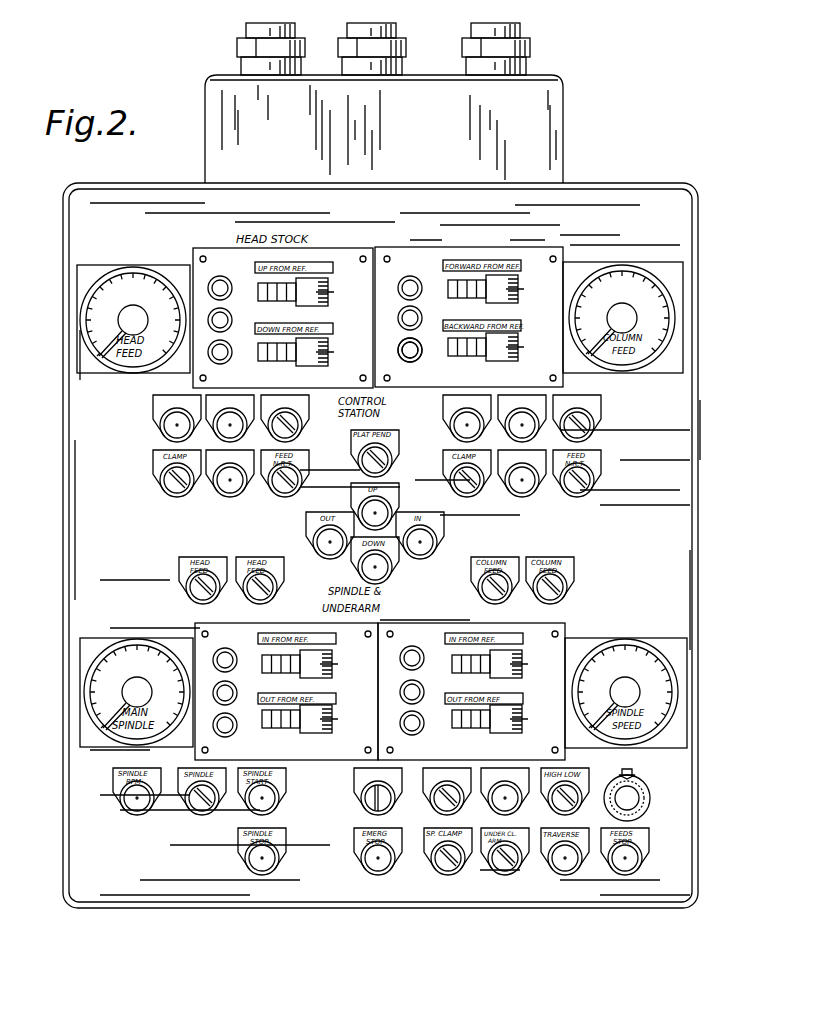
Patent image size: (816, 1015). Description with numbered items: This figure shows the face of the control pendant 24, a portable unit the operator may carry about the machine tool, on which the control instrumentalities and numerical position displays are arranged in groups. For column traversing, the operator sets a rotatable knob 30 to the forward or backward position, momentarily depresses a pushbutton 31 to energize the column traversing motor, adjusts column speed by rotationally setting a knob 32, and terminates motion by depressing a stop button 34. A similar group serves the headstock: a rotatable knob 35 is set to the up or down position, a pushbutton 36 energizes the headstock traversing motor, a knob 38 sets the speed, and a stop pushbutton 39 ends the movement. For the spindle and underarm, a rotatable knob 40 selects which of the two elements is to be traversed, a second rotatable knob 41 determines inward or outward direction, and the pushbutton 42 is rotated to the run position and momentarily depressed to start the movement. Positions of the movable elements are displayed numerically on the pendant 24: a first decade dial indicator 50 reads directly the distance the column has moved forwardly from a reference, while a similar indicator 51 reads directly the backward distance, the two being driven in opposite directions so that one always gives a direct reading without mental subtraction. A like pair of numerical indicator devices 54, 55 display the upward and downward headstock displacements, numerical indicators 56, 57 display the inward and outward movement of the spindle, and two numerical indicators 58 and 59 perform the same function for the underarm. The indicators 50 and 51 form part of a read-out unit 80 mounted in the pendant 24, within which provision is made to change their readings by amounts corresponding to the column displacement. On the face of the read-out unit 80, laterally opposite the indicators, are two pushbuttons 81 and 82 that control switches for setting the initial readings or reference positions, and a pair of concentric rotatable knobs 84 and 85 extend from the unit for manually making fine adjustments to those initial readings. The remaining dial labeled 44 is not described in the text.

The pendant 24 is at (66, 573).
The rotatable knob 30 is at (590, 438).
The pushbutton 31 is at (531, 437).
The knob 32 is at (455, 432).
The stop button 34 is at (526, 496).
The rotatable knob 35 is at (299, 438).
The pushbutton 36 is at (241, 436).
The knob 38 is at (165, 436).
The stop pushbutton 39 is at (233, 496).
The rotatable knob 40 is at (366, 800).
The second rotatable knob 41 is at (437, 808).
The pushbutton 42 is at (508, 806).
The RPM dial 44 is at (646, 791).
The first decade dial indicator 50 is at (526, 296).
The indicator 51 is at (528, 362).
The numerical indicator device 54 is at (330, 293).
The numerical indicator device 55 is at (330, 350).
The numerical indicator 56 is at (341, 670).
The numerical indicator 57 is at (341, 724).
The numerical indicator 58 is at (532, 670).
The numerical indicator 59 is at (532, 724).
The read-out unit 80 is at (553, 248).
The pushbutton 81 is at (408, 282).
The pushbutton 82 is at (405, 358).
The concentric rotatable knob 84 is at (401, 350).
The concentric rotatable knob 85 is at (403, 319).